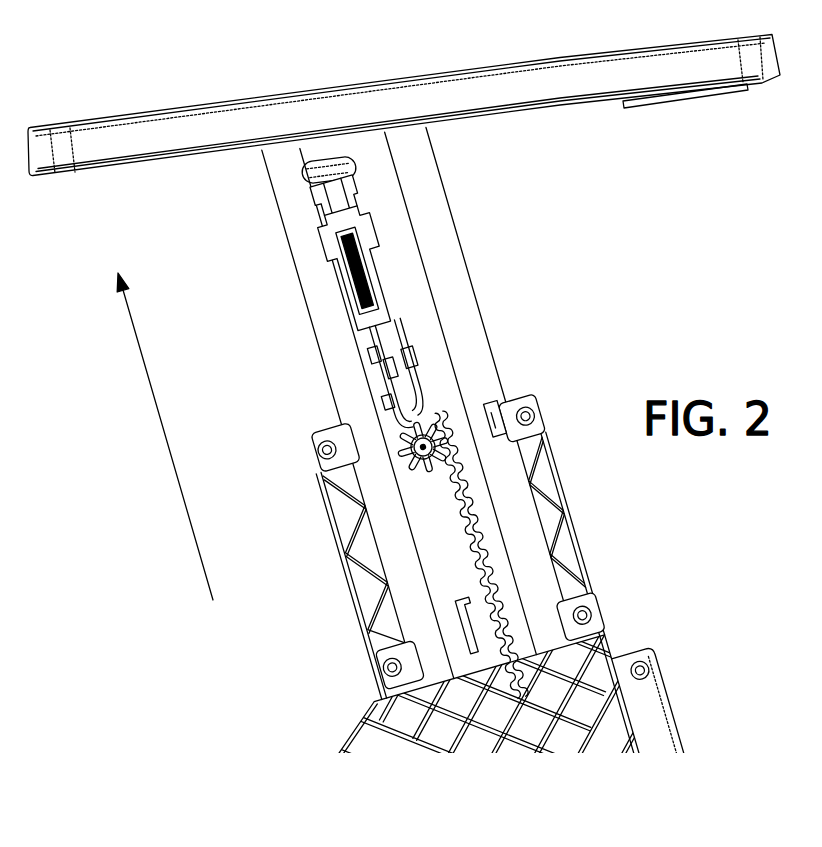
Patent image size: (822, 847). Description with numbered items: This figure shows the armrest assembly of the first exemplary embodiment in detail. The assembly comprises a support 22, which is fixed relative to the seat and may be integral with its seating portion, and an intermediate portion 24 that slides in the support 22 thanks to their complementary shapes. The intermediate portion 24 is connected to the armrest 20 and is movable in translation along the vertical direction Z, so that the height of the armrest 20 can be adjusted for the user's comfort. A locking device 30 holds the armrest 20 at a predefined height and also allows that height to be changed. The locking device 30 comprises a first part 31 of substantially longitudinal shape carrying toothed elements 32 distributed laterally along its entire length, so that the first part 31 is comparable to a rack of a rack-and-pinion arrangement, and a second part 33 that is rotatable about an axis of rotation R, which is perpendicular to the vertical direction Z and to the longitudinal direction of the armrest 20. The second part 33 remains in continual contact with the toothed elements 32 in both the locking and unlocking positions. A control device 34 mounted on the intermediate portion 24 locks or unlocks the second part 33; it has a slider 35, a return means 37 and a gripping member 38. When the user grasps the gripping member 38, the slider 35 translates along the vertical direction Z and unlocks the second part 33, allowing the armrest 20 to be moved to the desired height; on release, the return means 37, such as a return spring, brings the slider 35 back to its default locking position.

The armrest 20 is at (90, 120).
The gripping member 38 is at (317, 160).
The control device 34 is at (318, 210).
The return means 37 is at (355, 275).
The intermediate portion 24 is at (447, 290).
The vertical direction Z is at (151, 436).
The slider 35 is at (385, 367).
The locking device 30 is at (478, 400).
The axis of rotation R is at (410, 446).
The second part 33 is at (405, 462).
The first part 31 is at (460, 517).
The toothed elements 32 is at (477, 560).
The support 22 is at (555, 530).